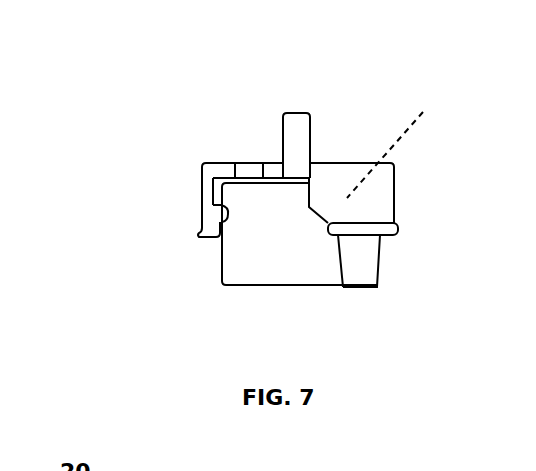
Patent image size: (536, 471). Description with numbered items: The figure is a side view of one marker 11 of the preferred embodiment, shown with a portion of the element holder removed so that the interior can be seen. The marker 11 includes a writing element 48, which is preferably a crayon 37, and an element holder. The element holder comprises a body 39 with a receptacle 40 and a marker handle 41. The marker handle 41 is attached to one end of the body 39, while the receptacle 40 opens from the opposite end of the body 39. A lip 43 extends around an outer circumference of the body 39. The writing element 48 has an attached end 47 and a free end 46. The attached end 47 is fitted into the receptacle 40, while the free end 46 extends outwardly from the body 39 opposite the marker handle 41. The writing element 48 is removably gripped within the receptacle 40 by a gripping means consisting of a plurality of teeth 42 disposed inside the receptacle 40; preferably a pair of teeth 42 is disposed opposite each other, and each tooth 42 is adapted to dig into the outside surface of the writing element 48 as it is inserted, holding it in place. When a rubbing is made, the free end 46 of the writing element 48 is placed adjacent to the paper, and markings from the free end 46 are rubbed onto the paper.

The marker 11 is at (187, 150).
The crayon 37 is at (360, 252).
The body 39 is at (382, 183).
The receptacle 40 is at (401, 142).
The marker handle 41 is at (295, 138).
The teeth 42 is at (224, 217).
The lip 43 is at (338, 240).
The free end 46 is at (245, 287).
The attached end 47 is at (255, 187).
The writing element 48 is at (222, 257).